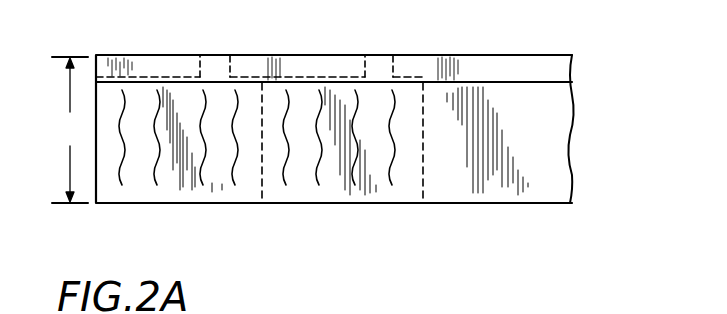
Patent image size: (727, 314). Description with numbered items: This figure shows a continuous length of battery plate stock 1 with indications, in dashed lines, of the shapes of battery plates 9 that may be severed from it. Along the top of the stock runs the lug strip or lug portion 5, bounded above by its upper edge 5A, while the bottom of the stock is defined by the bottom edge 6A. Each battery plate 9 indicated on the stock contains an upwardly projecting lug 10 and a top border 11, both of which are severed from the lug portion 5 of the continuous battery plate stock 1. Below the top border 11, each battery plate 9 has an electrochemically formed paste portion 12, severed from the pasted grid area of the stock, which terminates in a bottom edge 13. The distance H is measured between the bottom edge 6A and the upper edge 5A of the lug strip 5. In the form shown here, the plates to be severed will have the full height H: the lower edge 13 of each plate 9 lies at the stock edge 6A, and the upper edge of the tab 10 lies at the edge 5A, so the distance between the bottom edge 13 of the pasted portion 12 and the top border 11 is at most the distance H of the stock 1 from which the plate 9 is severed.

The continuous length of battery plate stock 1 is at (460, 206).
The lug portion 5 is at (422, 63).
The upper edge of lug strip 5A is at (118, 56).
The bottom edge of stock 6A is at (176, 204).
The battery plate 9 is at (158, 175).
The upwardly projecting lug 10 is at (222, 61).
The top border 11 is at (164, 79).
The electrochemically formed paste portion 12 is at (238, 179).
The bottom edge 13 is at (198, 204).
The distance H is at (70, 130).